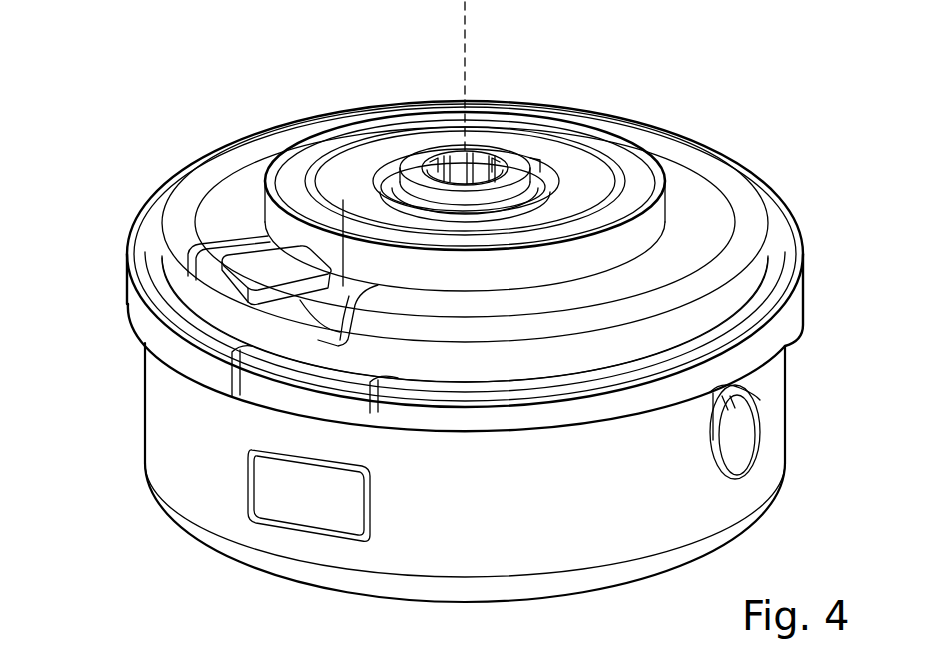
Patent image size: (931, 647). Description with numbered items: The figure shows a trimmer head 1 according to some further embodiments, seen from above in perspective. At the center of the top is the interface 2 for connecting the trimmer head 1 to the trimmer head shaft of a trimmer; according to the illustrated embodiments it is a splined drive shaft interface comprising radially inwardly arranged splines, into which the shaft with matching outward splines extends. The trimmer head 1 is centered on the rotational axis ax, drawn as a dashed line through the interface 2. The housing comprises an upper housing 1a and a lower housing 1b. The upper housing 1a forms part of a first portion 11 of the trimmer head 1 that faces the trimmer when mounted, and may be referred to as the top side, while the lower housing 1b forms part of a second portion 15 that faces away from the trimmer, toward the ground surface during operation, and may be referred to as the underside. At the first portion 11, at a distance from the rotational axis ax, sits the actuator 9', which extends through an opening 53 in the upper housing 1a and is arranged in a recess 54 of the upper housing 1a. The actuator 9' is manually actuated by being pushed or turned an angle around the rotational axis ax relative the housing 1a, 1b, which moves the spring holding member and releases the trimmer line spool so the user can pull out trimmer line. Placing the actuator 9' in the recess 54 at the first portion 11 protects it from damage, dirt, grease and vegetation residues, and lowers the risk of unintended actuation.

The trimmer head 1 is at (182, 88).
The upper housing 1a is at (697, 243).
The lower housing 1b is at (775, 440).
The interface 2 is at (482, 153).
The actuator 9' is at (220, 266).
The first portion 11 is at (257, 167).
The second portion 15 is at (270, 582).
The opening 53 is at (347, 295).
The recess 54 is at (148, 343).
The rotational axis ax is at (470, 43).